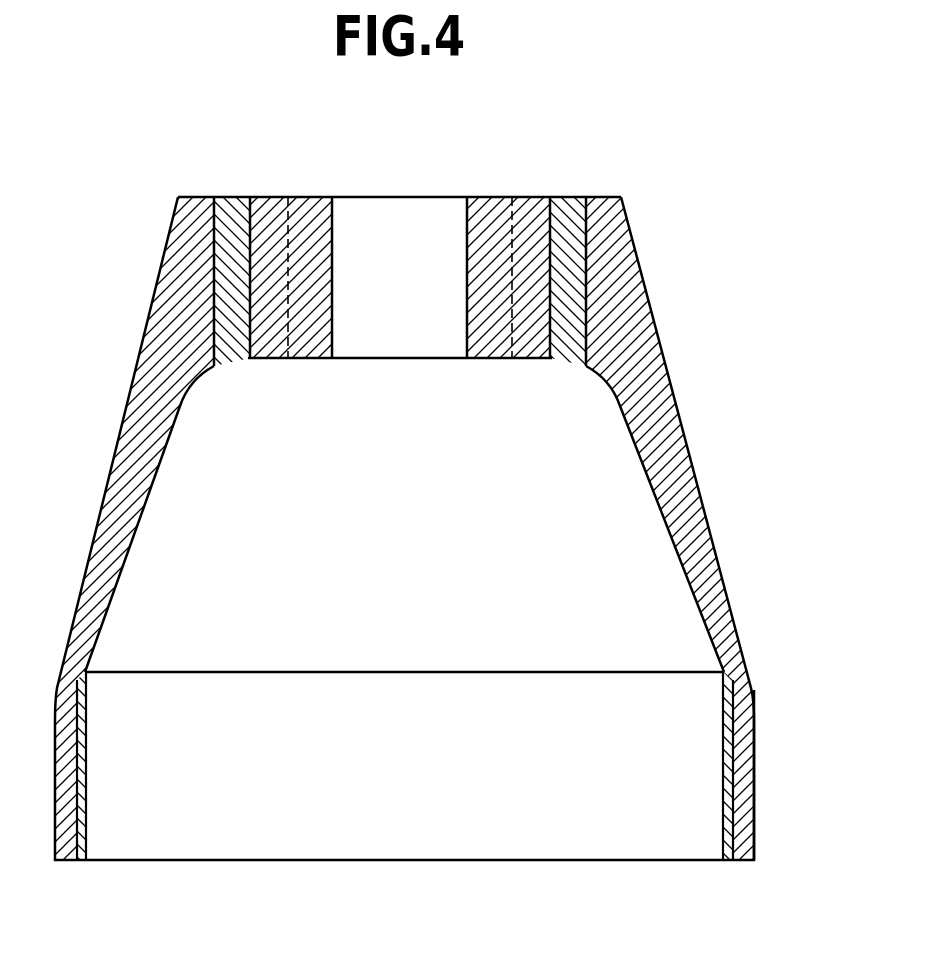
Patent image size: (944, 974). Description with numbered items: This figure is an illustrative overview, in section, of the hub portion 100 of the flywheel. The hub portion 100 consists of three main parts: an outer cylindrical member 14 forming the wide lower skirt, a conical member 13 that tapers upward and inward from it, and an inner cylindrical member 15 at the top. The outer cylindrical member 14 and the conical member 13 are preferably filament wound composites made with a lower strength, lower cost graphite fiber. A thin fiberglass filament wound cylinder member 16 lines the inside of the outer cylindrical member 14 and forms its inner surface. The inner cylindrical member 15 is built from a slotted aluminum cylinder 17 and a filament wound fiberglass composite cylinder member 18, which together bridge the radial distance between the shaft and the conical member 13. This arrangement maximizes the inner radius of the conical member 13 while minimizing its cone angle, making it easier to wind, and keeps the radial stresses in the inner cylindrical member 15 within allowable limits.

The hub portion 100 is at (293, 156).
The conical member 13 is at (685, 432).
The outer cylindrical member 14 is at (755, 766).
The inner cylindrical member 15 is at (520, 190).
The fiberglass filament wound cylinder member 16 is at (722, 773).
The slotted aluminum cylinder 17 is at (495, 360).
The filament wound fiberglass composite cylinder member 18 is at (565, 362).